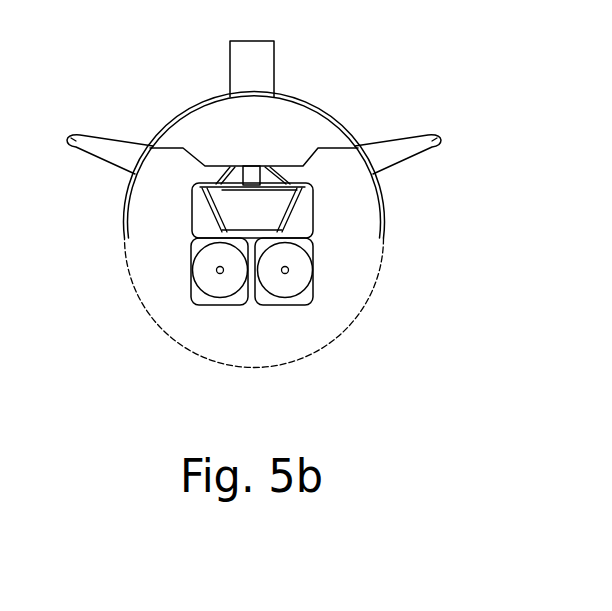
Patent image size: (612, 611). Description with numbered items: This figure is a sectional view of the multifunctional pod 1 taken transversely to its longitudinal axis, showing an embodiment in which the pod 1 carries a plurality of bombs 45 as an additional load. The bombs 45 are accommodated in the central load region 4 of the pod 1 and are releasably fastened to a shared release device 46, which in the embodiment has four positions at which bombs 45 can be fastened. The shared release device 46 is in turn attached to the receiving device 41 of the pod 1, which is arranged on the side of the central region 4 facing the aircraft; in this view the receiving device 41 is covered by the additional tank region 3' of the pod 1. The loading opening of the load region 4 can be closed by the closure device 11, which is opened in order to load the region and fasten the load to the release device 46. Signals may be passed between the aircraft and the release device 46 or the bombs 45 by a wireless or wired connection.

The multifunctional pod 1 is at (135, 103).
The additional tank region 3' is at (254, 133).
The closure device 11 is at (375, 273).
The receiving device 41 is at (272, 168).
The load region 4 is at (165, 245).
The release device 46 is at (313, 229).
The bombs 45 is at (283, 305).